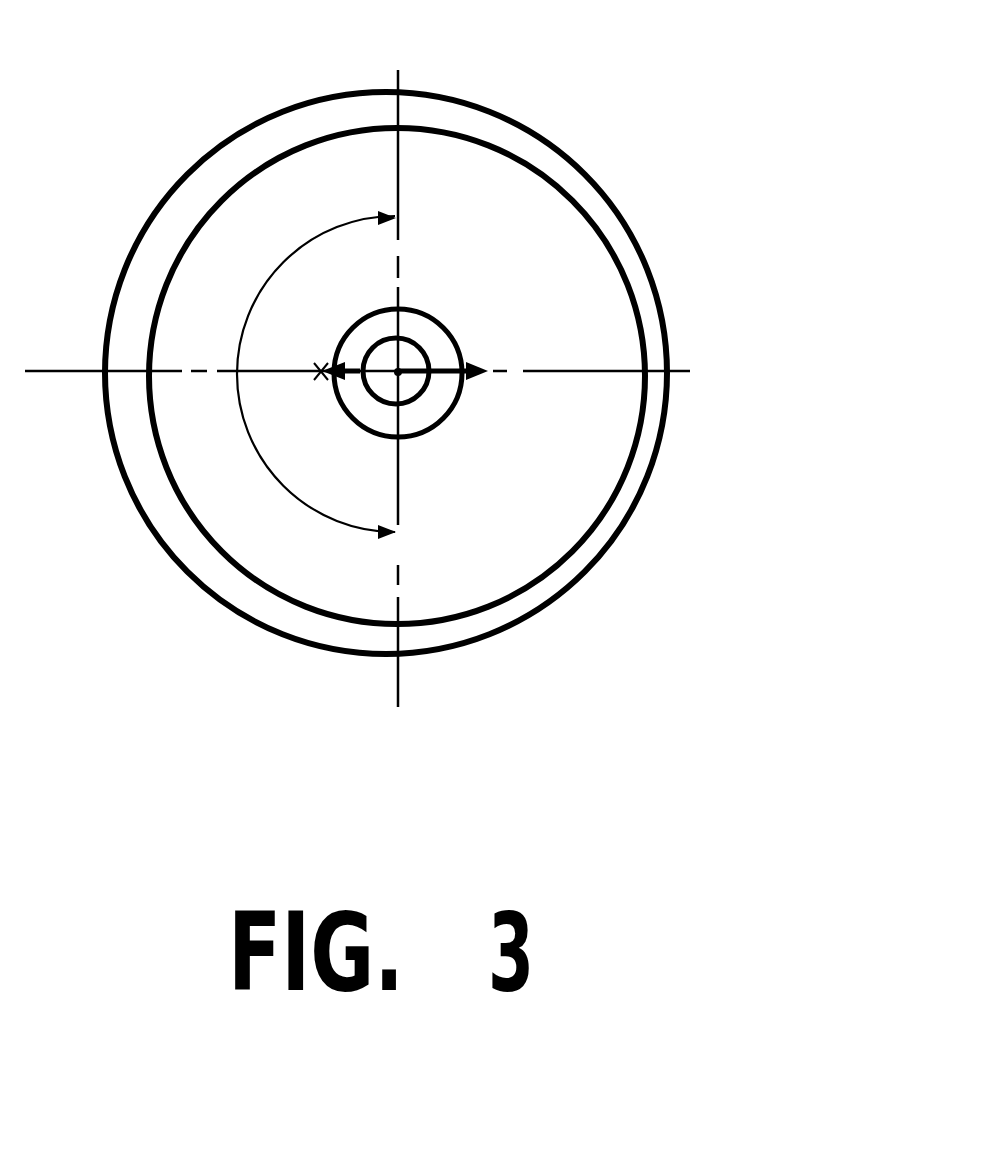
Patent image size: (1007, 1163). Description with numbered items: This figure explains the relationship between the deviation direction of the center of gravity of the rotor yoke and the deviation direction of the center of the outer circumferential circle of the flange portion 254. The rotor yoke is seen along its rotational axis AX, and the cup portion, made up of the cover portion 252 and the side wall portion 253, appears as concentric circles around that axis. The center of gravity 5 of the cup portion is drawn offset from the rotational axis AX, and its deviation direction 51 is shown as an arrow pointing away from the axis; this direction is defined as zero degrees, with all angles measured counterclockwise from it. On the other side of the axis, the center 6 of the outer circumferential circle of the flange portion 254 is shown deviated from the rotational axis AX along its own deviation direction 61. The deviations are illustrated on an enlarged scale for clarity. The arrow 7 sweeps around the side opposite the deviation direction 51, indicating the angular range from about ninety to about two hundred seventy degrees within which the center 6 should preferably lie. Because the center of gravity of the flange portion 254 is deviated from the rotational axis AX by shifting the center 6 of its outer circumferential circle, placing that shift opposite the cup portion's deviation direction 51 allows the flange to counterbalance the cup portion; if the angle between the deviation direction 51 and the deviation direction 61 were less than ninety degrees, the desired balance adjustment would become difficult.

The center of gravity of the cup portion 5 is at (488, 375).
The deviation direction of the center of gravity of the cup portion 51 is at (445, 380).
The center of the outer circumferential circle of the flange portion 6 is at (320, 377).
The deviation direction of the center of the outer circumferential circle of the fla 61 is at (348, 385).
The arrow 7 is at (308, 243).
The cover portion 252 is at (540, 210).
The side wall portion 253 is at (518, 157).
The flange portion 254 is at (655, 297).
The rotational axis AX is at (400, 374).